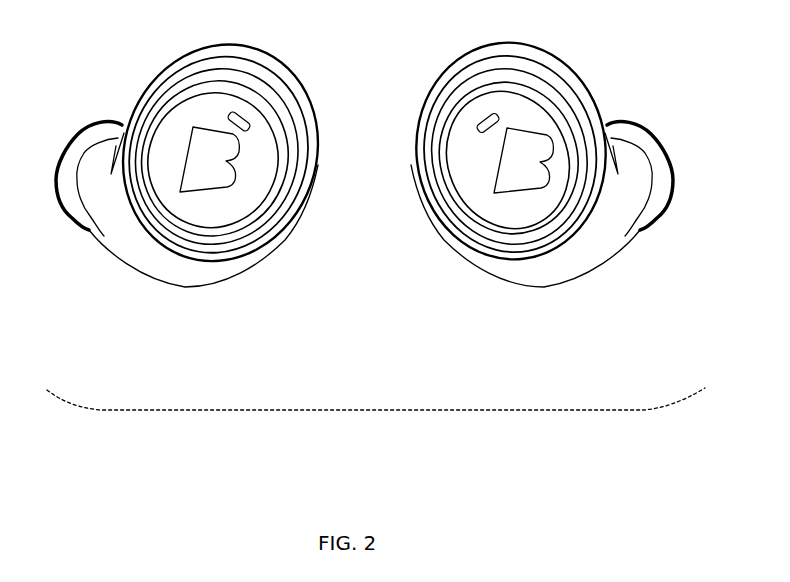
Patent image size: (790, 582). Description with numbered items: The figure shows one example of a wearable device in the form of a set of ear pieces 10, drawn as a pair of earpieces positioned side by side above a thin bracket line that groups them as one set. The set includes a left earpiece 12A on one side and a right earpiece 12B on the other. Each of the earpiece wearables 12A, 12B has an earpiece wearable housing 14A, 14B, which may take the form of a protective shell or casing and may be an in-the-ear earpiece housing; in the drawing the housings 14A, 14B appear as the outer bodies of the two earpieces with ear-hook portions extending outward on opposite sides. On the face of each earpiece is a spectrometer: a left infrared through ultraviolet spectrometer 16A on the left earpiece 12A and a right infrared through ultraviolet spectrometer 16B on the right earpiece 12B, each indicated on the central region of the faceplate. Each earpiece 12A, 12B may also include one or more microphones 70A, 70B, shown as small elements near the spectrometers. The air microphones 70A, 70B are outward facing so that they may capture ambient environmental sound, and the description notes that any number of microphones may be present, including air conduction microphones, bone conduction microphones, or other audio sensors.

The set of ear pieces 10 is at (360, 413).
The left earpiece 12A is at (220, 152).
The right earpiece 12B is at (511, 147).
The earpiece wearable housing 14A is at (198, 204).
The earpiece wearable housing 14B is at (542, 209).
The left infrared through ultraviolet spectrometer 16A is at (193, 127).
The right infrared through ultraviolet spectrometer 16B is at (530, 121).
The microphone 70A is at (301, 122).
The microphone 70B is at (479, 123).